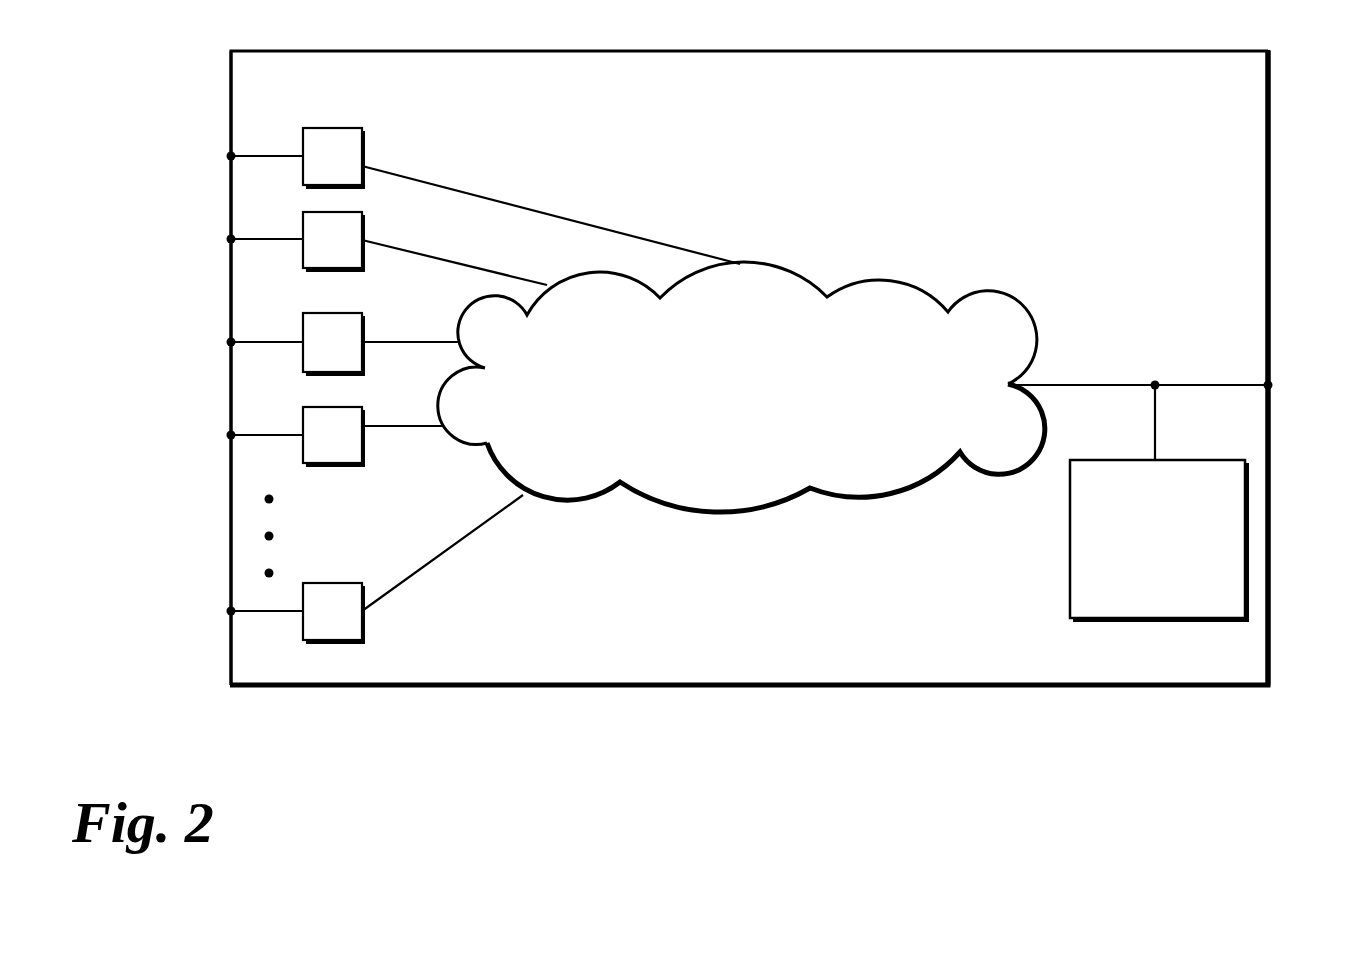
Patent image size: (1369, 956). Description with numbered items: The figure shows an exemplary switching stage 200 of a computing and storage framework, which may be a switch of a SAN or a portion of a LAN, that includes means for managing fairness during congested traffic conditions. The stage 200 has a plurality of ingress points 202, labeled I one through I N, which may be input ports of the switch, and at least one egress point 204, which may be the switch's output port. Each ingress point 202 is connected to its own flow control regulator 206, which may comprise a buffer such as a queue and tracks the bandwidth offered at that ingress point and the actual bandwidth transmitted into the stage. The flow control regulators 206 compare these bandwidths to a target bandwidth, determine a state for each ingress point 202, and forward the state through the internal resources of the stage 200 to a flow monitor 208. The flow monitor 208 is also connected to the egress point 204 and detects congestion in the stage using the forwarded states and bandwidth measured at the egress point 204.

The stage 200 is at (1019, 688).
The ingress points 202 is at (231, 137).
The egress point 204 is at (1268, 343).
The flow control regulator 206 is at (362, 140).
The flow monitor 208 is at (1070, 507).